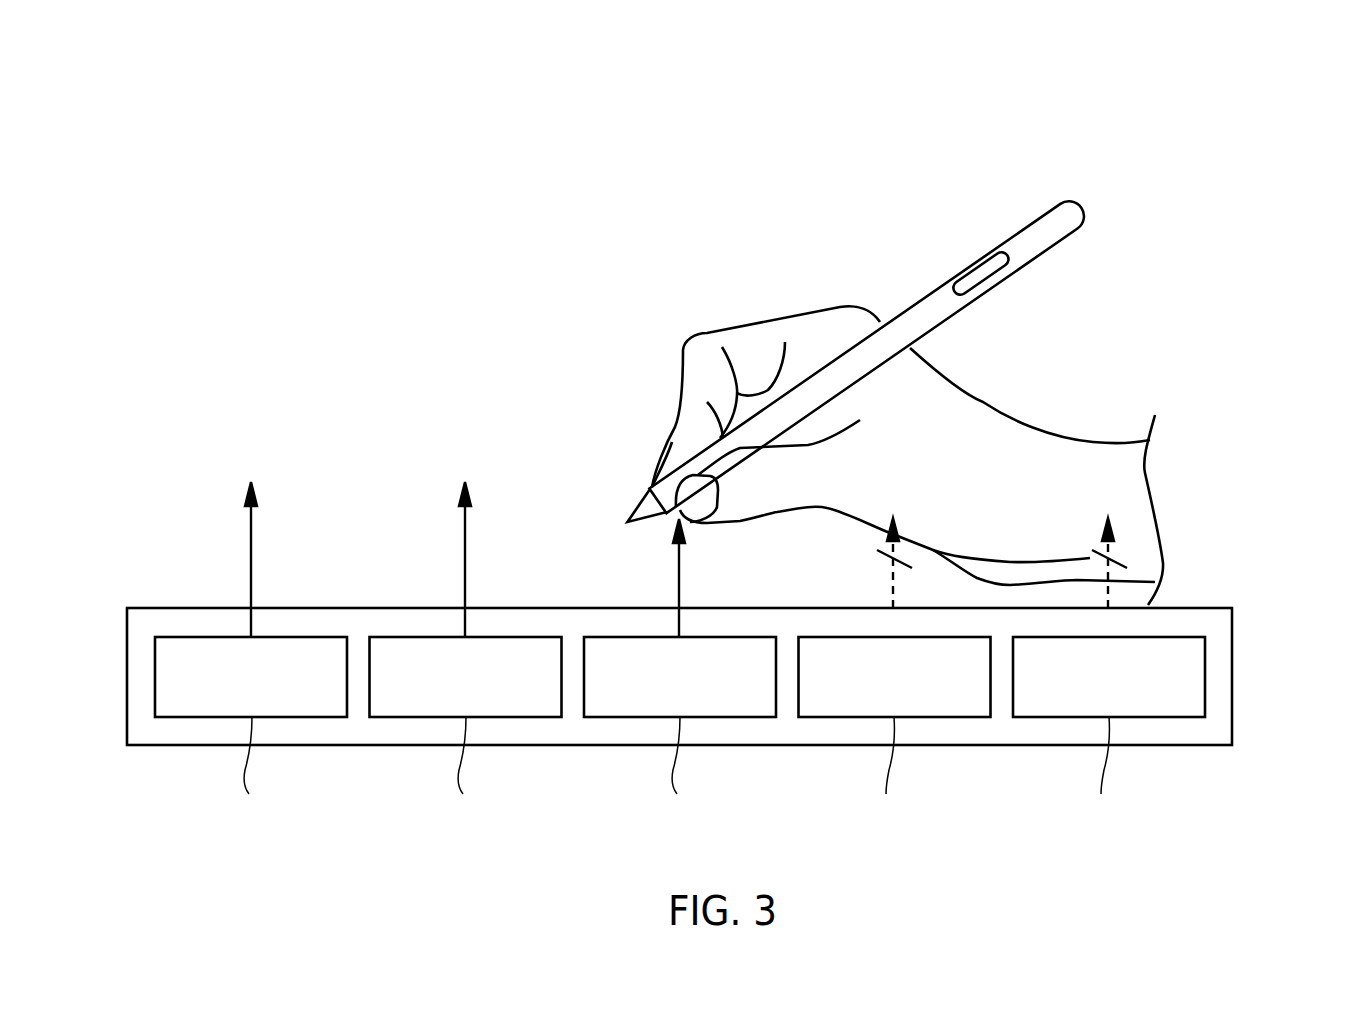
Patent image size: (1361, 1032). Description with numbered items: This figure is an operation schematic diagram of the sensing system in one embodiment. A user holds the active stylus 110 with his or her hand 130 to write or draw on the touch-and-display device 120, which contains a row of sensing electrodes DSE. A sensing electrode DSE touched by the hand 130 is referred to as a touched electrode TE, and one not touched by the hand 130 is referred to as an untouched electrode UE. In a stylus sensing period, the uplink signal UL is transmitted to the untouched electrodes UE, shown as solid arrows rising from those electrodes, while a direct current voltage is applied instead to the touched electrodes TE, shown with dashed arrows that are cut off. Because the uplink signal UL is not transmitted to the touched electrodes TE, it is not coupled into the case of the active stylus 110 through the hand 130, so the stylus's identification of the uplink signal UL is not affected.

The active stylus 110 is at (1048, 228).
The touch-and-display device 120 is at (1232, 678).
The hand 130 is at (962, 405).